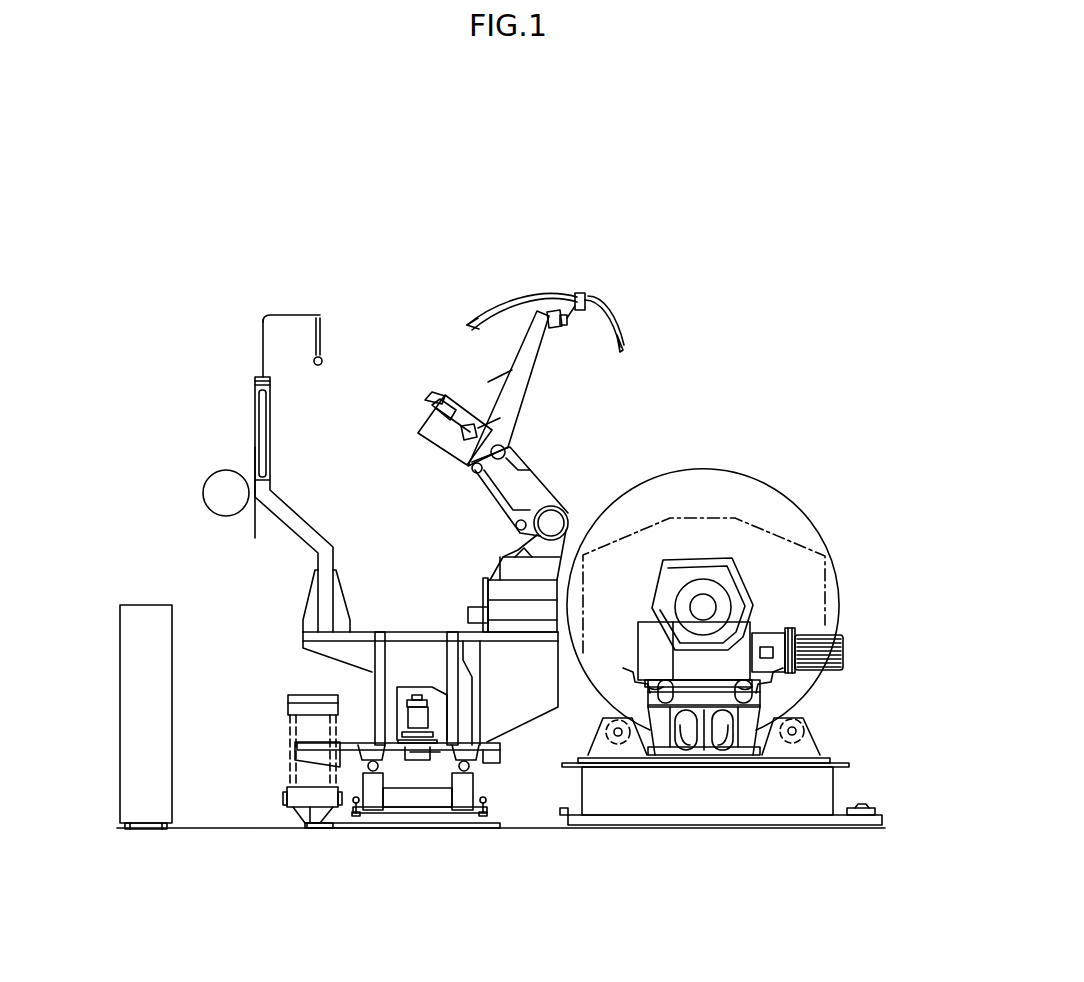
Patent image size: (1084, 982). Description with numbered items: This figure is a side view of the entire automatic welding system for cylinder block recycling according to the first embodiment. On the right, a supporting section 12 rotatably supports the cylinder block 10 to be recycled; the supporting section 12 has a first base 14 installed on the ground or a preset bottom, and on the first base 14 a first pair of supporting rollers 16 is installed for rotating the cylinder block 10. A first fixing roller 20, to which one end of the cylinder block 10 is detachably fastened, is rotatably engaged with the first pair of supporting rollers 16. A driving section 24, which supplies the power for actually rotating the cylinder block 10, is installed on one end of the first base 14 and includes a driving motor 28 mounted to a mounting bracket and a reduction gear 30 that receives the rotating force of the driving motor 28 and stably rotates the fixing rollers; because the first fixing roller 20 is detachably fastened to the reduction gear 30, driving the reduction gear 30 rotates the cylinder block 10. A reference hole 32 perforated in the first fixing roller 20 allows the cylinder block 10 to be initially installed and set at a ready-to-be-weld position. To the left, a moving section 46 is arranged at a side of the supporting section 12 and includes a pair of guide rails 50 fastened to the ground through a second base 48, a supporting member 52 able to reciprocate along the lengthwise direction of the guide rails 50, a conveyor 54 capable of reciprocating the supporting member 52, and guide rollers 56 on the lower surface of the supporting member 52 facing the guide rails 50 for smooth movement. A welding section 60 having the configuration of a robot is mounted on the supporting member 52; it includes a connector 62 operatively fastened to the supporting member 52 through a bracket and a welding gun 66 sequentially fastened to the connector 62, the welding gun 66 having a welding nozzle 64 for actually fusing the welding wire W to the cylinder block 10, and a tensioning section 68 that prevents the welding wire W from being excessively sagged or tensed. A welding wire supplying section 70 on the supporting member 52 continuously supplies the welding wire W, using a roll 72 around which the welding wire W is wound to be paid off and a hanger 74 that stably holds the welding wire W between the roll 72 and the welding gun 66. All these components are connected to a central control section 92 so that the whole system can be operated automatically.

The cylinder block 10 is at (737, 517).
The supporting section 12 is at (843, 752).
The first base 14 is at (818, 798).
The first pair of supporting rollers 16 is at (618, 742).
The first fixing roller 20 is at (683, 480).
The driving section 24 is at (780, 615).
The driving motor 28 is at (835, 641).
The reduction gear 30 is at (722, 593).
The reference hole 32 is at (703, 740).
The moving section 46 is at (284, 733).
The second base 48 is at (393, 800).
The guide rails 50 is at (362, 767).
The supporting member 52 is at (370, 743).
The conveyor 54 is at (292, 772).
The guide rollers 56 is at (462, 770).
The welding section 60 is at (463, 396).
The connector 62 is at (545, 468).
The welding nozzle 64 is at (625, 342).
The welding gun 66 is at (515, 386).
The tensioning section 68 is at (440, 417).
The welding wire supplying section 70 is at (245, 364).
The roll 72 is at (216, 478).
The hanger 74 is at (324, 358).
The central control section 92 is at (133, 598).
The welding wire W is at (534, 289).